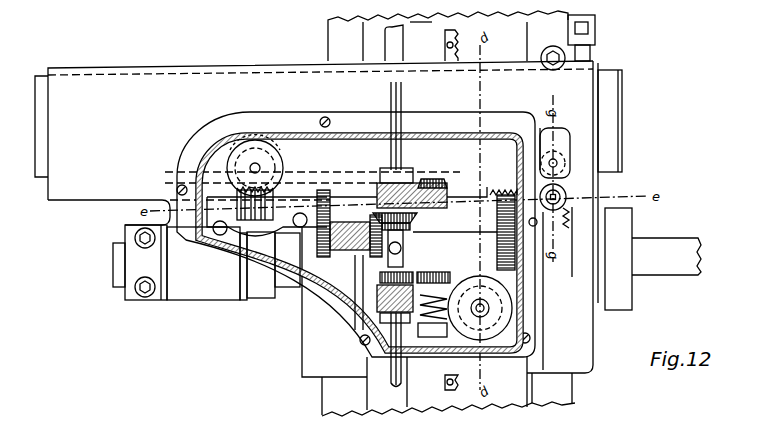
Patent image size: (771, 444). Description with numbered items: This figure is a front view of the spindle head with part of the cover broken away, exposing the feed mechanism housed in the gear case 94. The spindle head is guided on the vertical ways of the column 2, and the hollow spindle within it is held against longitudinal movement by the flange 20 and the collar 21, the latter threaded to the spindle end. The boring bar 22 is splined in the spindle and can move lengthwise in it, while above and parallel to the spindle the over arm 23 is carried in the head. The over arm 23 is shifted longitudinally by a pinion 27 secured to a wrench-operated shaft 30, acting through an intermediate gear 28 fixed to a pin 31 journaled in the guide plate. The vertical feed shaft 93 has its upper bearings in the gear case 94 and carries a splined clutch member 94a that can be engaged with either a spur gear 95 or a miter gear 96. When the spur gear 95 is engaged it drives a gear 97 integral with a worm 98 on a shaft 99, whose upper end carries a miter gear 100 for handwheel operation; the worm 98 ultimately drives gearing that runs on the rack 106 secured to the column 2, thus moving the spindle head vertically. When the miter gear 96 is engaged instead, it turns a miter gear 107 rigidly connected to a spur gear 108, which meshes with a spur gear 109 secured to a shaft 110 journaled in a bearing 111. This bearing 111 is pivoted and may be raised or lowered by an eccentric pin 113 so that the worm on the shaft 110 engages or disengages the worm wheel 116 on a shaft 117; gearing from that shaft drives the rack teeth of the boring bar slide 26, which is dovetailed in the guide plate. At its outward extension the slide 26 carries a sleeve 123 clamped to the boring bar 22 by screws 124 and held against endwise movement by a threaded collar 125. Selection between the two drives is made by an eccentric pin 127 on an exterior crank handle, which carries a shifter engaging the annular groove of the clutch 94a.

The column 2 is at (424, 22).
The flange 20 is at (631, 221).
The collar 21 is at (280, 293).
The boring bar 22 is at (686, 240).
The over arm 23 is at (622, 86).
The boring bar slide 26 is at (500, 188).
The pinion 27 is at (560, 190).
The intermediate gear 28 is at (563, 160).
The shaft 30 is at (554, 288).
The pin 31 is at (560, 150).
The feed shaft 93 is at (390, 94).
The gear case 94 is at (535, 323).
The clutch member 94a is at (380, 277).
The spur gear 95 is at (383, 263).
The miter gear 96 is at (435, 216).
The gear 97 is at (470, 282).
The worm 98 is at (437, 327).
The shaft 99 is at (430, 178).
The miter gear 100 is at (440, 180).
The rack 106 is at (455, 30).
The miter gear 107 is at (373, 212).
The spur gear 108 is at (327, 272).
The spur gear 109 is at (323, 190).
The shaft 110 is at (283, 200).
The bearing 111 is at (283, 223).
The eccentric pin 113 is at (218, 235).
The worm wheel 116 is at (265, 141).
The shaft 117 is at (255, 166).
The sleeve 123 is at (125, 233).
The screws 124 is at (143, 296).
The threaded collar 125 is at (237, 297).
The eccentric pin 127 is at (410, 250).